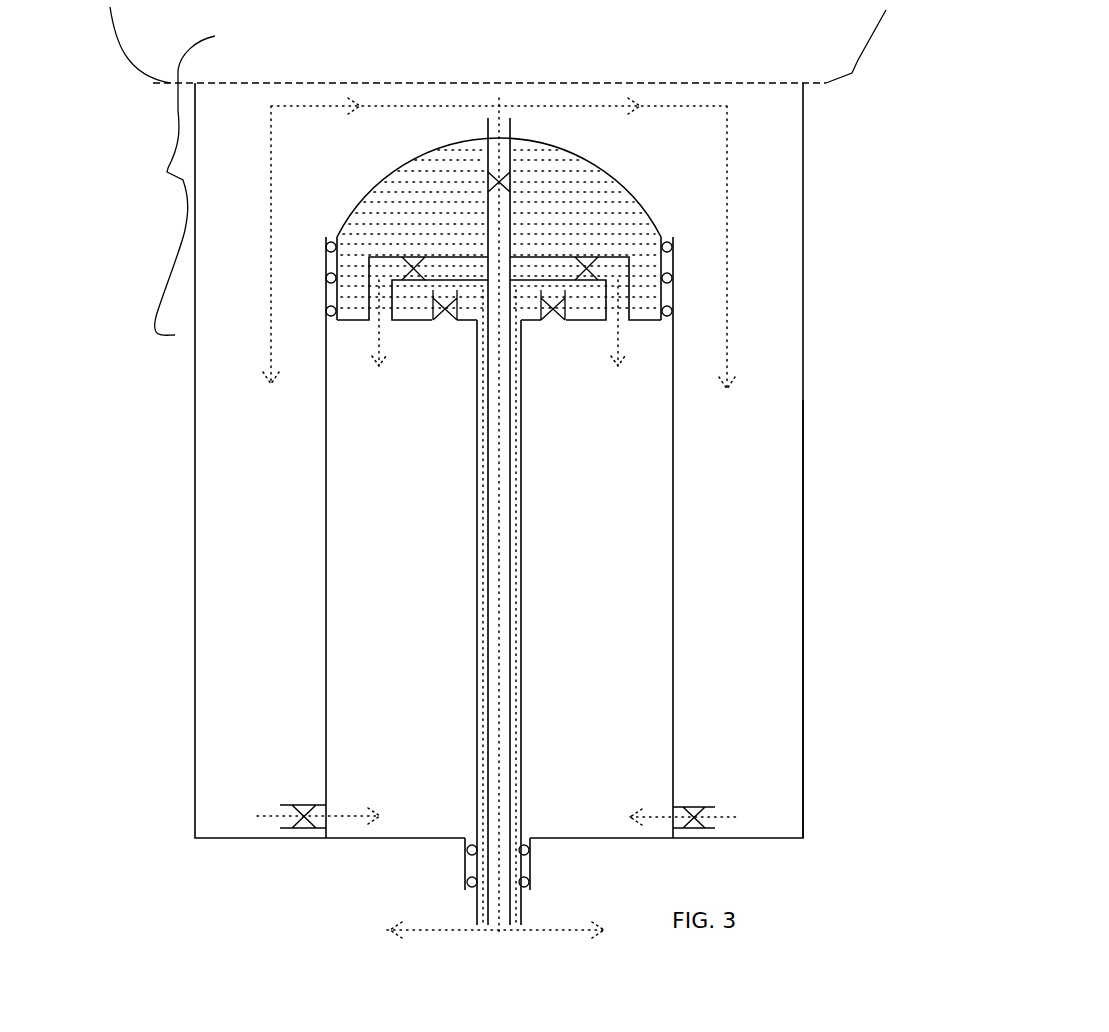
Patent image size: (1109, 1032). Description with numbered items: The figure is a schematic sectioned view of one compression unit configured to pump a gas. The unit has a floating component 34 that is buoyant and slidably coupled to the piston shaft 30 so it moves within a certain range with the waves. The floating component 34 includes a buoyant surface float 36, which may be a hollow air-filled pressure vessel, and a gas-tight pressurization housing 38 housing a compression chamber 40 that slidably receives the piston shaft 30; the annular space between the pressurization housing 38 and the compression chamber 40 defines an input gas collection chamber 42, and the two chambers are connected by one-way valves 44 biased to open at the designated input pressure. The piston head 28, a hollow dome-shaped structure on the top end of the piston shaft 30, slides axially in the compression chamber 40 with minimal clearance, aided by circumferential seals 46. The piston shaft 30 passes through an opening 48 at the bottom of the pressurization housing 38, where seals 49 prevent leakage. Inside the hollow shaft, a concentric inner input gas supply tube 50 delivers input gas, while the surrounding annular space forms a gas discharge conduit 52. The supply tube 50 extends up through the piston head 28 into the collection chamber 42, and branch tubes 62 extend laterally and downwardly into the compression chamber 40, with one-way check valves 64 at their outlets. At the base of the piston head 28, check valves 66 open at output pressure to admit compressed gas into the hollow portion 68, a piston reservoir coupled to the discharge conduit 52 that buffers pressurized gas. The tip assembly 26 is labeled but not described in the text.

The tip assembly 26 is at (546, 370).
The piston head 28 is at (633, 197).
The piston shaft 30 is at (520, 537).
The floating component 34 is at (173, 172).
The buoyant surface float 36 is at (828, 78).
The pressurization housing 38 is at (803, 635).
The compression chamber 40 is at (398, 565).
The input gas collection chamber 42 is at (270, 545).
The one-way valves 44 is at (297, 827).
The circumferential seals 46 is at (673, 280).
The opening 48 is at (524, 893).
The seals 49 is at (467, 888).
The inner input gas supply tube 50 is at (497, 688).
The gas discharge conduit 52 is at (480, 668).
The branch tubes 62 is at (618, 290).
The one-way check valves 64 is at (512, 186).
The one-way check valves 66 is at (433, 300).
The hollow portion 68 is at (392, 205).